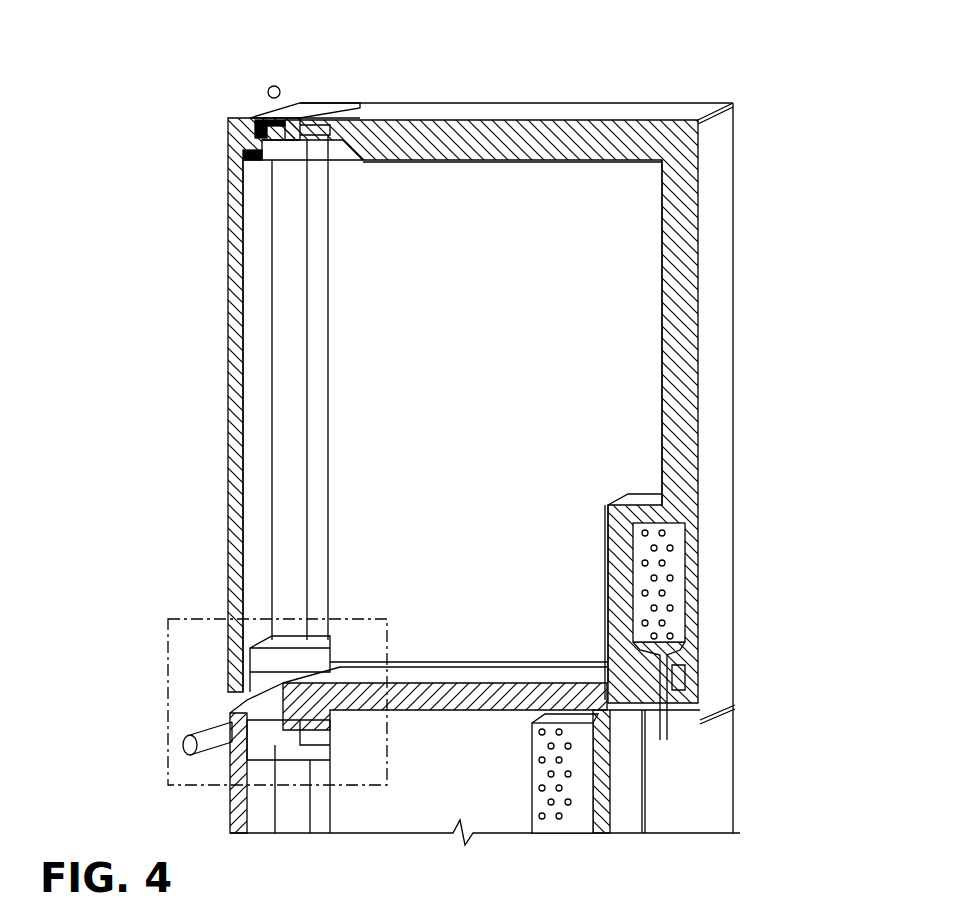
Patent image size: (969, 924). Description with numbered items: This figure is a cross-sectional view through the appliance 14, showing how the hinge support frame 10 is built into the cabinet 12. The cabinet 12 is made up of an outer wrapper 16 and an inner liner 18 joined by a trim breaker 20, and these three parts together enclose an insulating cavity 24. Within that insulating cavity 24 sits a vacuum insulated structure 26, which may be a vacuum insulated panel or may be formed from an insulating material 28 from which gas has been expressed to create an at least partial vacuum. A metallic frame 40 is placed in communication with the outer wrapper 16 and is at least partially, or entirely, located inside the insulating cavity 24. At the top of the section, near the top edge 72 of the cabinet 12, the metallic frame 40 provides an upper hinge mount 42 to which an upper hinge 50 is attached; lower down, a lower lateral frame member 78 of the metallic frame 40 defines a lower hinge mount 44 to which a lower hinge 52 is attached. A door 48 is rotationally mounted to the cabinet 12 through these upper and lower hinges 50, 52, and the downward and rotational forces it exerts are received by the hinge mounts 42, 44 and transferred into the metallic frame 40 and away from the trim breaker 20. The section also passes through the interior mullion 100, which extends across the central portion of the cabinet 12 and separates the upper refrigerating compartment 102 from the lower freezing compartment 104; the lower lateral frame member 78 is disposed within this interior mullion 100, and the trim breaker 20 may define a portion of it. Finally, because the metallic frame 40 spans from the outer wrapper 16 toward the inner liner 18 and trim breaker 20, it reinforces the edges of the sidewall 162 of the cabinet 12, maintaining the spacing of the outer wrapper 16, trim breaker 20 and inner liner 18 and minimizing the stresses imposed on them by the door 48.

The hinge support frame 10 is at (366, 70).
The cabinet 12 is at (735, 255).
The appliance 14 is at (205, 61).
The outer wrapper 16 is at (640, 103).
The inner liner 18 is at (406, 167).
The trim breaker 20 is at (330, 138).
The insulating cavity 24 is at (540, 100).
The vacuum insulated structure 26 is at (712, 318).
The insulating material 28 is at (684, 198).
The metallic frame 40 is at (345, 128).
The upper hinge mount 42 is at (250, 114).
The lower hinge mount 44 is at (232, 698).
The door 48 is at (226, 532).
The upper hinge 50 is at (306, 95).
The lower hinge 52 is at (228, 733).
The top edge 72 is at (268, 126).
The lower lateral frame member 78 is at (310, 750).
The interior mullion 100 is at (512, 669).
The refrigerating compartment 102 is at (572, 404).
The freezing compartment 104 is at (516, 773).
The sidewall 162 is at (578, 462).